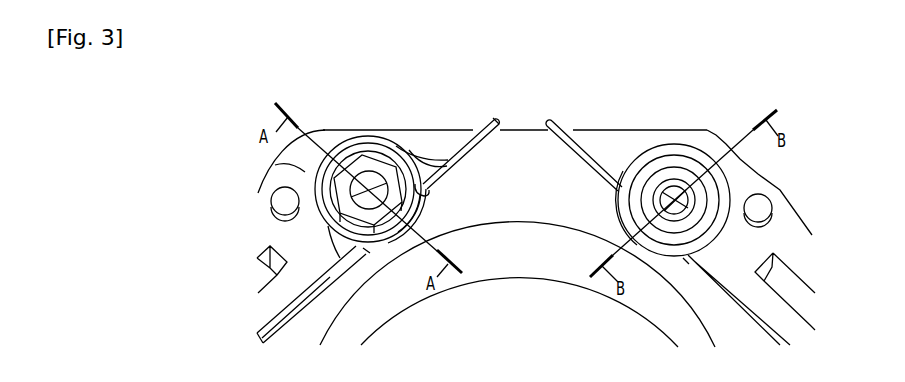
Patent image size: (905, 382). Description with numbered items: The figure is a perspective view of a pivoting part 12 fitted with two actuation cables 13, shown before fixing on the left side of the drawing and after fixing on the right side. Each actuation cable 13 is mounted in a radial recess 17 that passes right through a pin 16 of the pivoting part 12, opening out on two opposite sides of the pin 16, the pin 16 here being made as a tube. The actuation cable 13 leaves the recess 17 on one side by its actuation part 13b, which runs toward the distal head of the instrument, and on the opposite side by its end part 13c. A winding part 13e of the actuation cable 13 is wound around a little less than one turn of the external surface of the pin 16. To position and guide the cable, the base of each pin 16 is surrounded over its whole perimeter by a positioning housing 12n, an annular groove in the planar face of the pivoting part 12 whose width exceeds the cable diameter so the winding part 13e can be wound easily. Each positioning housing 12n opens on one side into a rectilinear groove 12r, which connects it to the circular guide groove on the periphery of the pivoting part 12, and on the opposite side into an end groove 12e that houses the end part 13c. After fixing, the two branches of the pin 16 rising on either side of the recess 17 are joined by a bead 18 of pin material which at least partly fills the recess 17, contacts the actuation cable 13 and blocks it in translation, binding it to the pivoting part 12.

The pivoting part 12 is at (518, 152).
The end groove 12e is at (450, 158).
The rectilinear groove 12r is at (313, 280).
The positioning housing 12n is at (320, 193).
The actuation cable 13 is at (372, 186).
The actuation part 13b is at (260, 342).
The end part 13c is at (494, 119).
The winding part 13e is at (299, 201).
The pin 16 is at (390, 246).
The radial recess 17 is at (326, 224).
The bead 18 is at (674, 162).